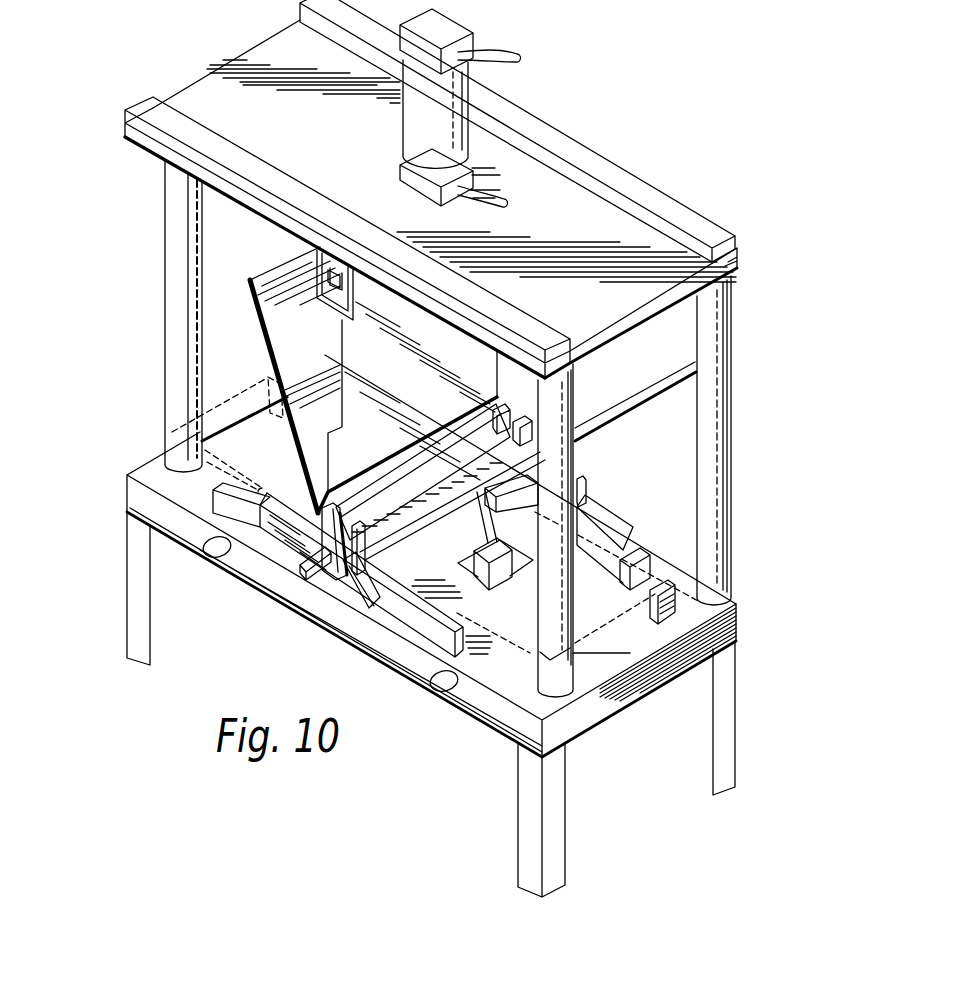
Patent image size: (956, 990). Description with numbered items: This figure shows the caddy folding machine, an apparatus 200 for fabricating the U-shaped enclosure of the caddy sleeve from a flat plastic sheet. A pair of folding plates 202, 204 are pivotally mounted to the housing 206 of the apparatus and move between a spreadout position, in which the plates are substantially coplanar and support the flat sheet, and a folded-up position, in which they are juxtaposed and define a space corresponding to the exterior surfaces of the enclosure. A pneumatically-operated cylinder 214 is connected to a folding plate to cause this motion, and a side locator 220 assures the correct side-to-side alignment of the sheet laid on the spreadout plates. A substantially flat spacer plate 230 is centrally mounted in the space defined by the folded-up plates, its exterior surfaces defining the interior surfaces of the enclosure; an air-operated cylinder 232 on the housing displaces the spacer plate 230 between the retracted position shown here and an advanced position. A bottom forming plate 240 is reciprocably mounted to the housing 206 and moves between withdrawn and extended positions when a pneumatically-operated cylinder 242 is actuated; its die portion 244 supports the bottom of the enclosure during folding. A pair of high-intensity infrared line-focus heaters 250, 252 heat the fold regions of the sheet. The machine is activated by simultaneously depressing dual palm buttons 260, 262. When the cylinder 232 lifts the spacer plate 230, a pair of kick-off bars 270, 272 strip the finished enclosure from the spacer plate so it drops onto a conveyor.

The apparatus 200 is at (690, 153).
The folding plate 202 is at (300, 259).
The folding plate 204 is at (620, 398).
The housing 206 is at (587, 722).
The pneumatically-operated cylinder 214 is at (508, 588).
The side locator 220 is at (272, 390).
The spacer plate 230 is at (318, 447).
The air-operated cylinder 232 is at (405, 127).
The bottom forming plate 240 is at (530, 495).
The pneumatically-operated cylinder 242 is at (597, 545).
The die portion 244 is at (440, 470).
The heater 250 is at (302, 570).
The heater 252 is at (353, 613).
The palm button 260 is at (220, 556).
The palm button 262 is at (446, 684).
The kick-off bar 270 is at (330, 311).
The kick-off bar 272 is at (362, 318).